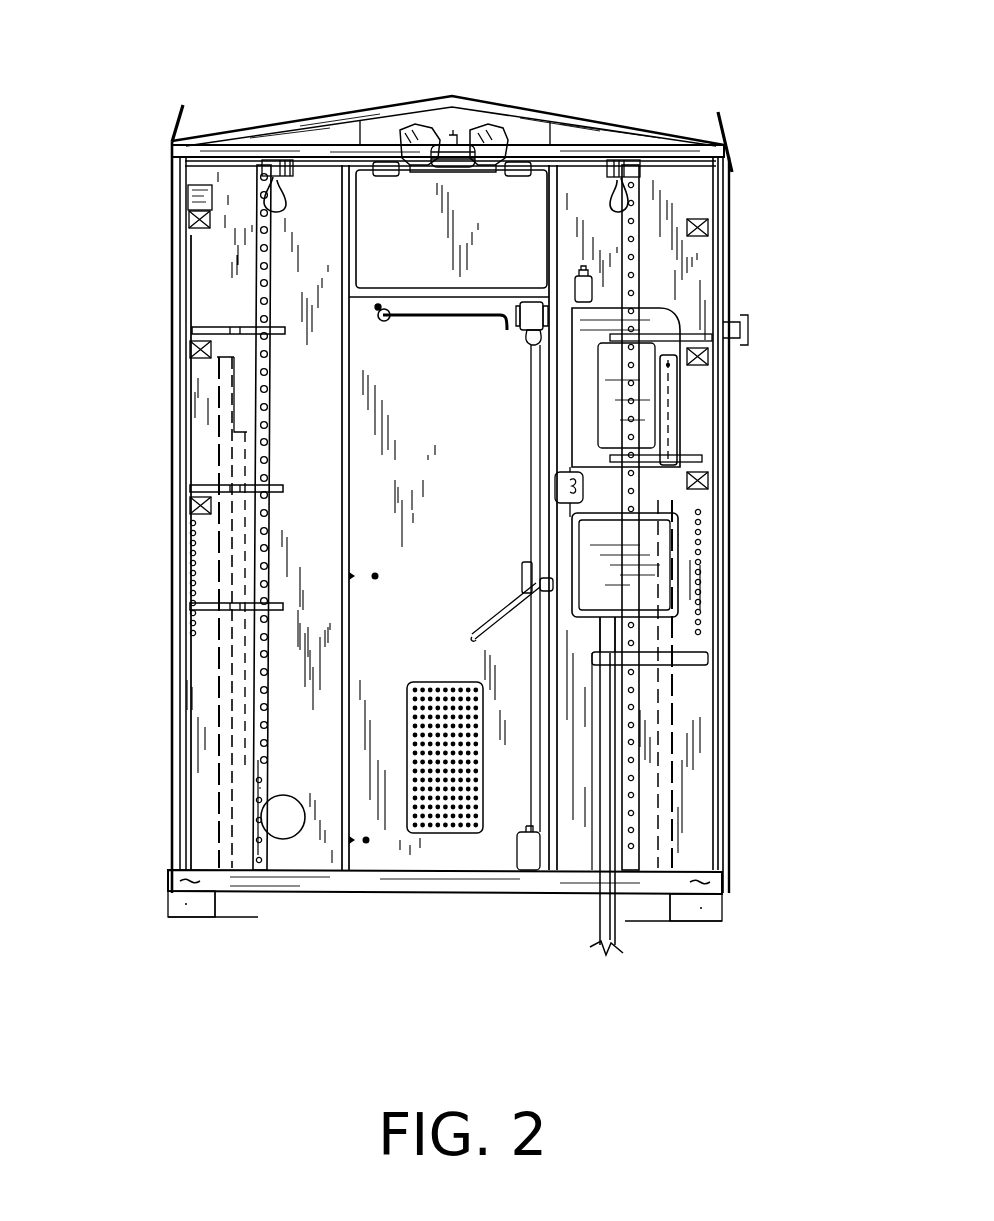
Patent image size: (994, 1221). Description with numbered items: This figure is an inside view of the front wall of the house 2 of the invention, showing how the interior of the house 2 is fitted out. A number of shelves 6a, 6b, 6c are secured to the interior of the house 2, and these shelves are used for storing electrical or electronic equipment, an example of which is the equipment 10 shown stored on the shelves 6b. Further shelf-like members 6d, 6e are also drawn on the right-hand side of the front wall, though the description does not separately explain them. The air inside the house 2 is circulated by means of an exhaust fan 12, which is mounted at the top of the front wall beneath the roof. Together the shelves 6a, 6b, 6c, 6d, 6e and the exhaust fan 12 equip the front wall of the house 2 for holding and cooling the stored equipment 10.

The house 2 is at (753, 129).
The exhaust fan 12 is at (405, 135).
The electrical or electronic equipment 10 is at (197, 462).
The shelf 6a is at (270, 348).
The shelf 6b is at (272, 495).
The shelf 6c is at (272, 610).
The equipment housing 6d is at (675, 308).
The mounting rail 6e is at (673, 450).